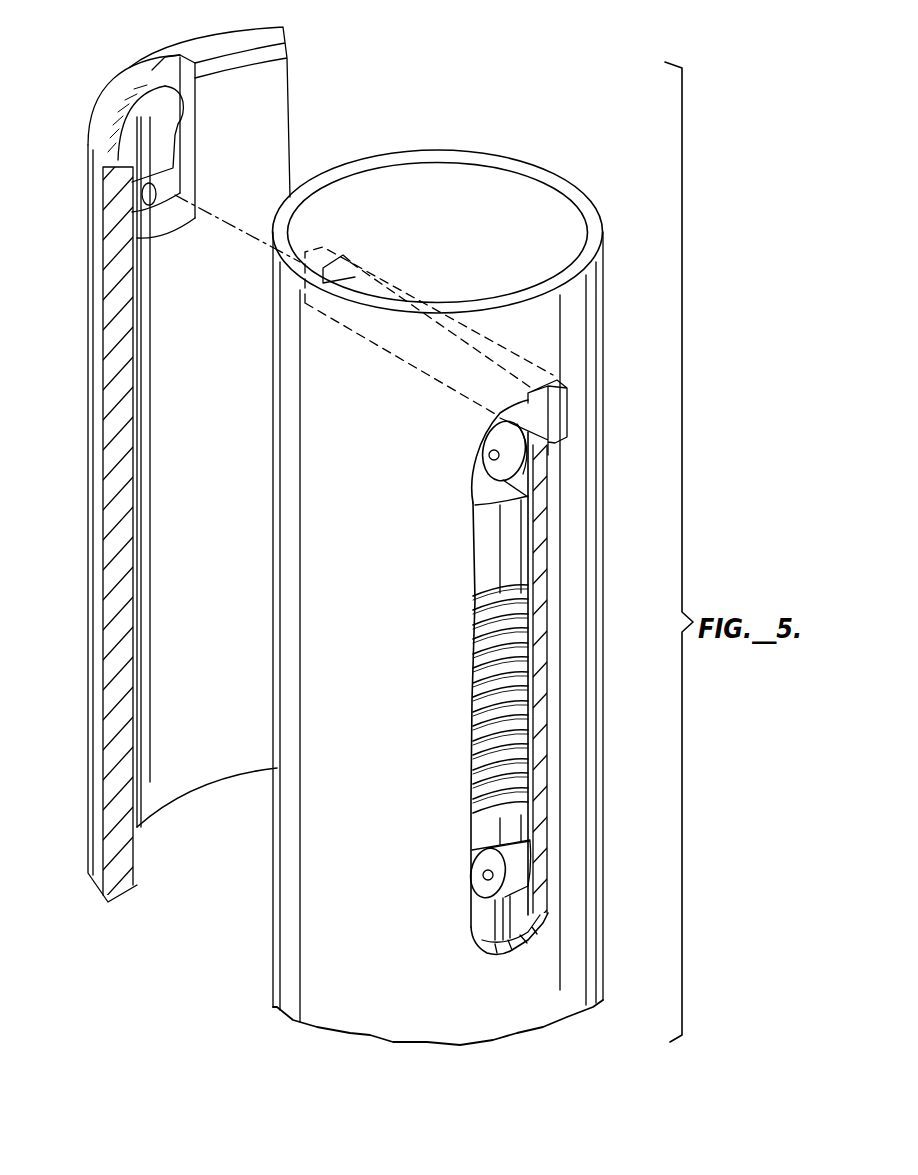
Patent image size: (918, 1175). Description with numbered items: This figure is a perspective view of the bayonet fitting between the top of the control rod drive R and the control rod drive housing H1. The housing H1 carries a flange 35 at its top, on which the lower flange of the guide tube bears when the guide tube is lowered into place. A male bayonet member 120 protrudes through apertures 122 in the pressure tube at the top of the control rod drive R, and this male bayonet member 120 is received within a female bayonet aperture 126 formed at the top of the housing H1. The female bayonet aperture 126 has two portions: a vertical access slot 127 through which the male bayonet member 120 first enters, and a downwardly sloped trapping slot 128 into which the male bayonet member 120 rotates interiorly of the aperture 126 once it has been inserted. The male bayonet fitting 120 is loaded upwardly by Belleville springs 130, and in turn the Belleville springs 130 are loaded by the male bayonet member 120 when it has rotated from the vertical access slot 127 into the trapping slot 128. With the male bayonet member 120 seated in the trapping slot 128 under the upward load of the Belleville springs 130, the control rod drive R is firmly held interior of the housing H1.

The flange 35 is at (217, 62).
The female bayonet aperture 126 is at (168, 76).
The vertical access slot 127 is at (181, 113).
The downwardly sloped trapping slot 128 is at (135, 207).
The control rod drive housing H1 is at (88, 566).
The male bayonet member 120 is at (303, 293).
The apertures 122 is at (550, 452).
The Belleville springs 130 is at (523, 665).
The control rod drive R is at (604, 795).